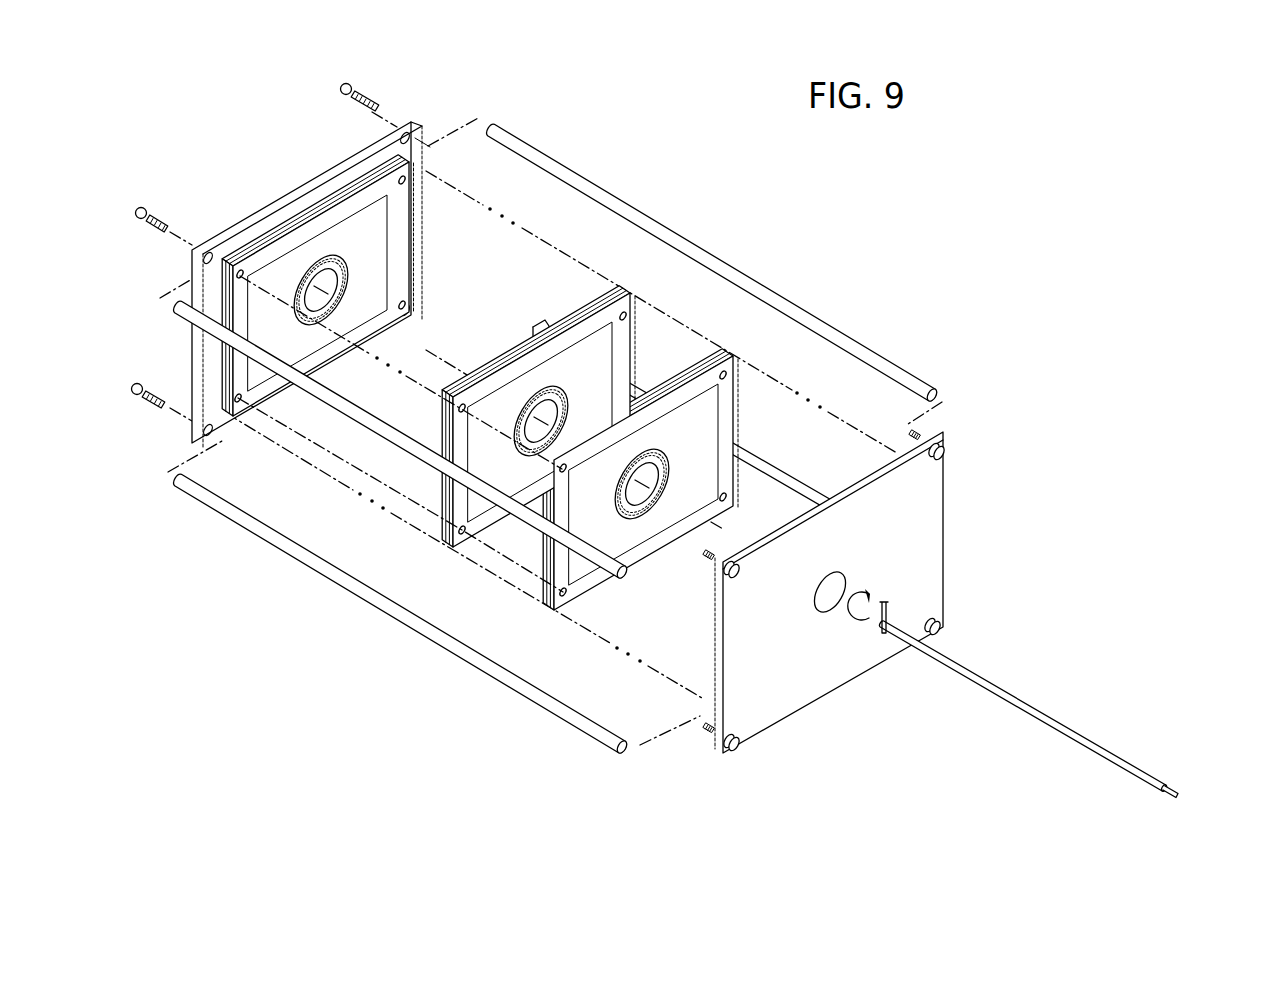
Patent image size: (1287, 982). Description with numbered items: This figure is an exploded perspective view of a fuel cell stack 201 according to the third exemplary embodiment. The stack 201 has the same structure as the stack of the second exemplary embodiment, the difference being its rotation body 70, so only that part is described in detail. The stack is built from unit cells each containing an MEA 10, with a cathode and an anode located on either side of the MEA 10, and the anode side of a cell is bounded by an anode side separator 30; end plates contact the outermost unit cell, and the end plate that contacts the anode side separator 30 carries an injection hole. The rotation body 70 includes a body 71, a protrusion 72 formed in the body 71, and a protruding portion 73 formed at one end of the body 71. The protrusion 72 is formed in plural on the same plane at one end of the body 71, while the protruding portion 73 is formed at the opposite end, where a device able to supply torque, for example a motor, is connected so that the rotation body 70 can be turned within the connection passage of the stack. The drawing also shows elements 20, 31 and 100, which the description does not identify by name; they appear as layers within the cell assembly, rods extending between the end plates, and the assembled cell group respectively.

The MEA 10 is at (319, 206).
The gasket / separator layer 20 is at (292, 221).
The anode side separator 30 is at (240, 222).
The tie rod 31 is at (837, 329).
The rotation body 70 is at (1026, 693).
The body 71 is at (1025, 706).
The protrusion 72 is at (878, 628).
The protruding portion 73 is at (1177, 791).
The cell stack 100 is at (771, 260).
The fuel cell stack 201 is at (732, 153).